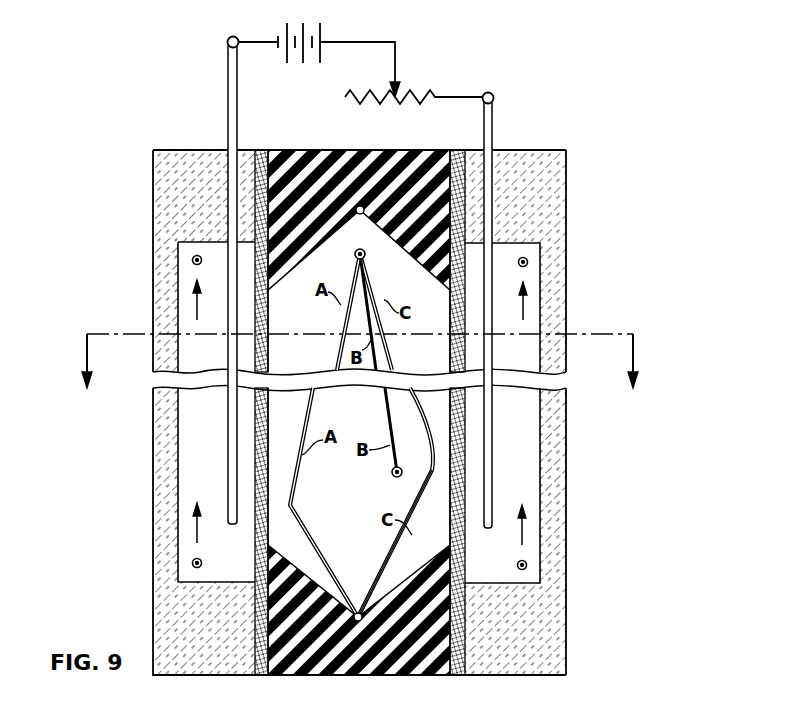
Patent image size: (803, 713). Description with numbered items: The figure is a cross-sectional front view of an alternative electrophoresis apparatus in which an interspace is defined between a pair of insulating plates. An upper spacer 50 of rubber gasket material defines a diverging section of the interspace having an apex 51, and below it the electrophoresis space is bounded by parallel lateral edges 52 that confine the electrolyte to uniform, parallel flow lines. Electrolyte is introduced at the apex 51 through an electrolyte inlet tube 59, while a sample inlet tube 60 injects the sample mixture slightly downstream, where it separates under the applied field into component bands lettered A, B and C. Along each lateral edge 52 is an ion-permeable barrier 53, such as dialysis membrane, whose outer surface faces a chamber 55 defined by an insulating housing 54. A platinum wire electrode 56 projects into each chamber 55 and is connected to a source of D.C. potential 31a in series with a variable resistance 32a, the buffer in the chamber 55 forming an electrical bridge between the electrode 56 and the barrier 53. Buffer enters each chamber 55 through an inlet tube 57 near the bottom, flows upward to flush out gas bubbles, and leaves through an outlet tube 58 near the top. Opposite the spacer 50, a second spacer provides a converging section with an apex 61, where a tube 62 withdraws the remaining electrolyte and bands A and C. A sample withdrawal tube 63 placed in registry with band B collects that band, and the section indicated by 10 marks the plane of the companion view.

The source of D.C. potential 31a is at (322, 33).
The variable resistance 32a is at (440, 97).
The wire electrode 56 is at (228, 106).
The ion-permeable barrier 53 is at (262, 150).
The spacer 50 is at (338, 150).
The housing 54 is at (153, 210).
The chamber 55 is at (175, 316).
The outlet tube 58 is at (193, 260).
The inlet tube 57 is at (193, 563).
The section line 10- 10 is at (359, 364).
The apex 51 is at (357, 214).
The electrolyte inlet tube 59 is at (365, 254).
The sample inlet tube 60 is at (366, 258).
The lateral edges 52 is at (268, 320).
The sample withdrawal tube 63 is at (393, 474).
The apex 61 is at (360, 612).
The tube 62 is at (357, 613).